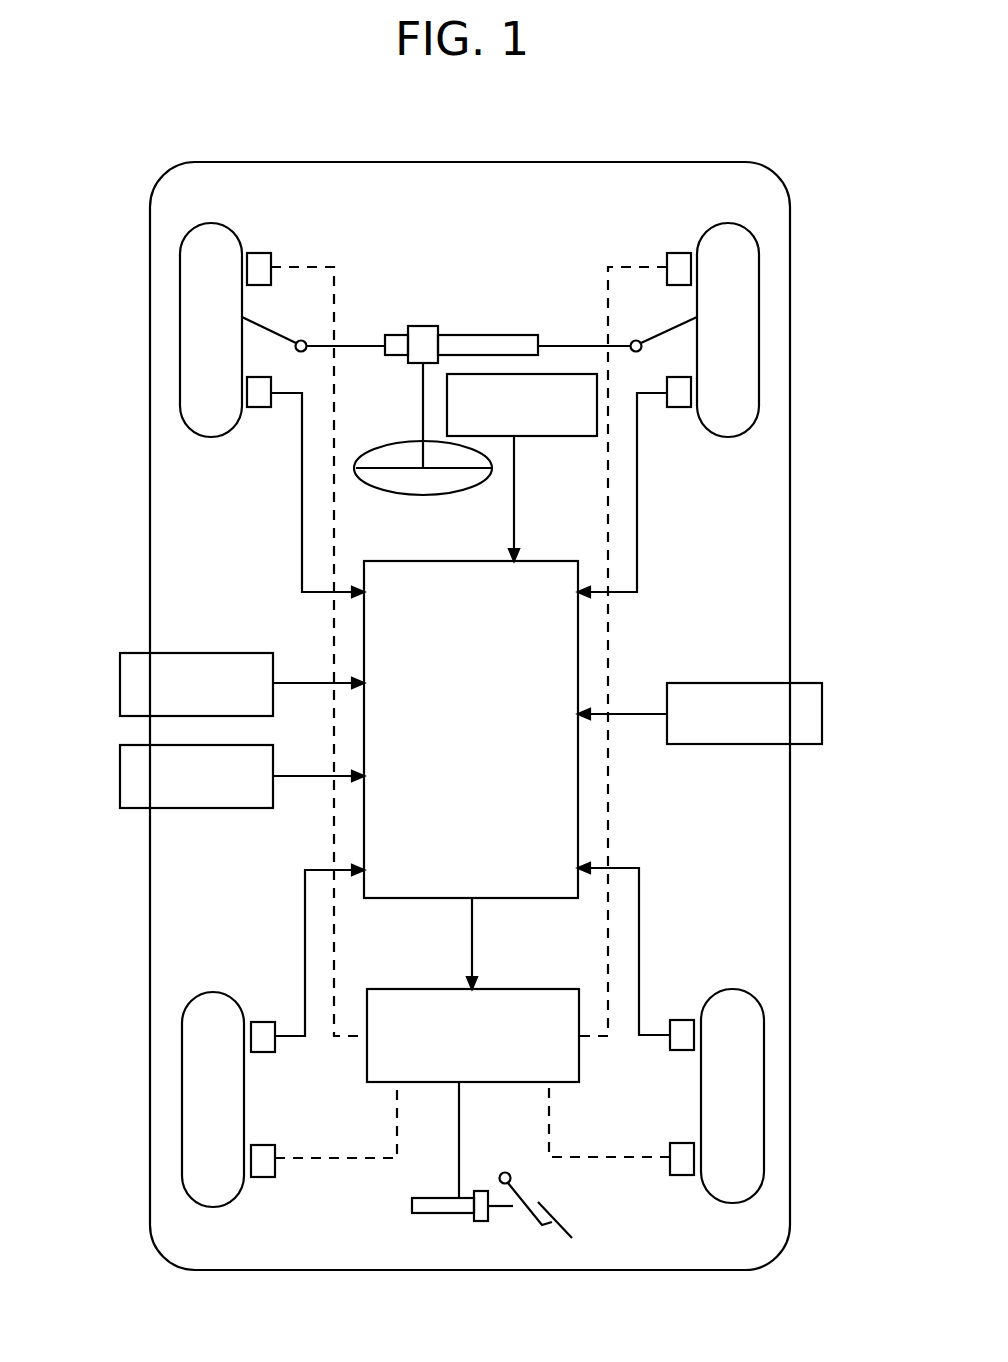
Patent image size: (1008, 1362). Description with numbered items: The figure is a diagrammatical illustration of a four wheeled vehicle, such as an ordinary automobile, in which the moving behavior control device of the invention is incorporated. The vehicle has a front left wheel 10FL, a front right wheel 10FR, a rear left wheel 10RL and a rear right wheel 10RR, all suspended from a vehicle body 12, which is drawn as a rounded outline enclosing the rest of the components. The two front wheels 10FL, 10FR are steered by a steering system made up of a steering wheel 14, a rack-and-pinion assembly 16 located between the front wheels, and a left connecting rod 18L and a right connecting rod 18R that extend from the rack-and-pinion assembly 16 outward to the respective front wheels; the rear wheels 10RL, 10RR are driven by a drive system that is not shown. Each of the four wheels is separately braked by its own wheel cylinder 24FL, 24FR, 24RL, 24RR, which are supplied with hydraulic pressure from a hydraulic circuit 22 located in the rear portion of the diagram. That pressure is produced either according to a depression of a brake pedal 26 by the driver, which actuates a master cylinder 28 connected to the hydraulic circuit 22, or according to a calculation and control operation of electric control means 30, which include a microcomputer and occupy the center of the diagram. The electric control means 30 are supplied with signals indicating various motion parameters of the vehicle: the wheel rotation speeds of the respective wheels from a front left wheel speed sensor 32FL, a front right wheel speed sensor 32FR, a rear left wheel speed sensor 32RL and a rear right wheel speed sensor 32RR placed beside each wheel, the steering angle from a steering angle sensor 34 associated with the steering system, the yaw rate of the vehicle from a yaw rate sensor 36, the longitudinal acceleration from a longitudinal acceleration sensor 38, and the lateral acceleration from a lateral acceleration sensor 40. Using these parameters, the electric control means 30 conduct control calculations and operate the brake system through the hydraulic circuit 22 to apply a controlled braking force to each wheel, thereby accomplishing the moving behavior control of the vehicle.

The front left wheel 10FL is at (180, 343).
The front right wheel 10FR is at (759, 343).
The rear left wheel 10RL is at (182, 1107).
The rear right wheel 10RR is at (764, 1105).
The vehicle body 12 is at (790, 498).
The steering wheel 14 is at (420, 497).
The rack-and-pinion assembly 16 is at (437, 305).
The left connecting rod 18L is at (258, 322).
The right connecting rod 18R is at (681, 318).
The hydraulic circuit 22 is at (473, 990).
The front left wheel cylinder 24FL is at (258, 266).
The front right wheel cylinder 24FR is at (680, 266).
The rear left wheel cylinder 24RL is at (263, 1155).
The rear right wheel cylinder 24RR is at (682, 1152).
The brake pedal 26 is at (567, 1227).
The master cylinder 28 is at (432, 1213).
The electric control means 30 is at (471, 729).
The front left wheel speed sensor 32FL is at (258, 398).
The front right wheel speed sensor 32FR is at (680, 398).
The rear left wheel speed sensor 32RL is at (265, 1030).
The rear right wheel speed sensor 32RR is at (682, 1027).
The steering angle sensor 34 is at (553, 436).
The yaw rate sensor 36 is at (214, 653).
The longitudinal acceleration sensor 38 is at (213, 808).
The lateral acceleration sensor 40 is at (732, 683).